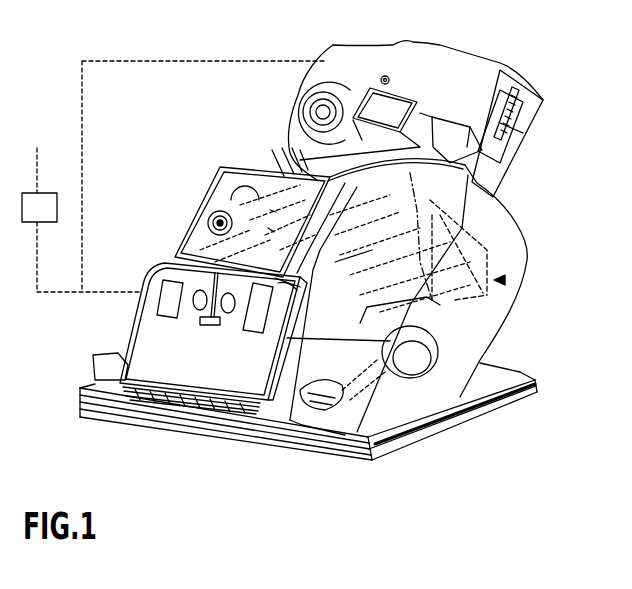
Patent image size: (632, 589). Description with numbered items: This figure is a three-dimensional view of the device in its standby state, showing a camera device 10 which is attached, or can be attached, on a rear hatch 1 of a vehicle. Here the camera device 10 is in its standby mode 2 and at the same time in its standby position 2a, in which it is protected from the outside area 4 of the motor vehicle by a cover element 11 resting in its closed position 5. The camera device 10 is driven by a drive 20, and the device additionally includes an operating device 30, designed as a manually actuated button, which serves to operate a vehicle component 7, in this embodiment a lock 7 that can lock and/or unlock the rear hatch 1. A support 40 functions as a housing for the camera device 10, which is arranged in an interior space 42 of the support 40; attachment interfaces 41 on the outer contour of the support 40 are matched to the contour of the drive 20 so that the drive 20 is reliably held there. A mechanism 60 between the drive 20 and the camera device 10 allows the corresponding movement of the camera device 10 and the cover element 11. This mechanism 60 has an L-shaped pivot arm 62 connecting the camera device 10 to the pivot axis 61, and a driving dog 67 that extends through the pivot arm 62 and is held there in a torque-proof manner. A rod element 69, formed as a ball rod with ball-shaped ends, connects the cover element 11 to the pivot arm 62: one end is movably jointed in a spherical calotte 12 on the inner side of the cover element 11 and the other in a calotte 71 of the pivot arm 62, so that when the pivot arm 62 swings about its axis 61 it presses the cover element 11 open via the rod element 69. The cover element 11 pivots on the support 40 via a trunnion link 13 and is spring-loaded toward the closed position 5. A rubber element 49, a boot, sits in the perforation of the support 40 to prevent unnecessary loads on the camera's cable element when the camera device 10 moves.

The rear hatch 1 is at (75, 388).
The standby mode 2 is at (360, 551).
The standby position 2a is at (405, 551).
The outside area 4 is at (189, 525).
The closed position 5 is at (446, 551).
The vehicle component 7 is at (173, 176).
The camera device 10 is at (480, 307).
The cover element 11 is at (388, 422).
The spherical calotte 12 is at (307, 417).
The trunnion link 13 is at (463, 422).
The drive 20 is at (317, 83).
The operating device 30 is at (172, 367).
The support 40 is at (522, 243).
The attachment interfaces 41 is at (497, 160).
The interior space 42 is at (505, 280).
The rubber element 49 is at (230, 197).
The mechanism 60 is at (327, 220).
The pivot axis 61 is at (213, 223).
The pivot arm 62 is at (267, 197).
The driving dog 67 is at (343, 260).
The rod element 69 is at (292, 378).
The calotte 71 is at (372, 400).